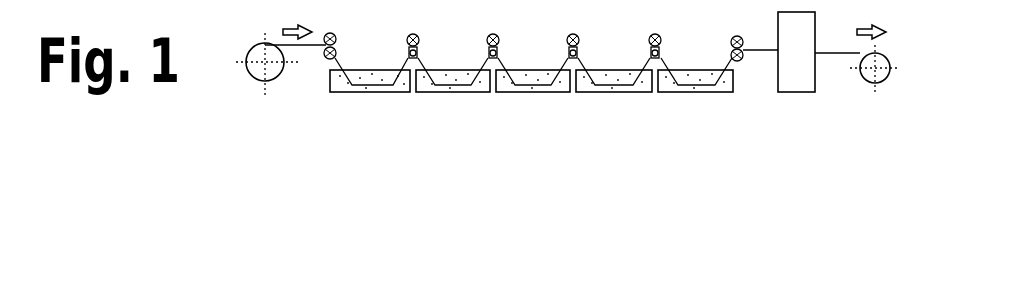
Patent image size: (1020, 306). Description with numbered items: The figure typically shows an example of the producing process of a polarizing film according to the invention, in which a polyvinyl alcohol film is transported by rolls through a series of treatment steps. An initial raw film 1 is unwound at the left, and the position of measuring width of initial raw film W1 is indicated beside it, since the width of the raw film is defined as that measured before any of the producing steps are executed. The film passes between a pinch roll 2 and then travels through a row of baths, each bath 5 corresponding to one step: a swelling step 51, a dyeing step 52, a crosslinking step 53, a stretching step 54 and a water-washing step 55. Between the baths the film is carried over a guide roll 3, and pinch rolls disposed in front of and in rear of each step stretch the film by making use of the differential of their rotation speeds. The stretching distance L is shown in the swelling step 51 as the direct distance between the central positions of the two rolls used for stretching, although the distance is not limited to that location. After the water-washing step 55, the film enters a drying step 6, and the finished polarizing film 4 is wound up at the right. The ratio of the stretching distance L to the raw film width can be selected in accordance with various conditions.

The initial raw film 1 is at (258, 78).
The pinch roll 2 is at (334, 46).
The guide roll 3 is at (430, 70).
The polarizing film 4 is at (878, 83).
The bath 5 is at (537, 113).
The swelling step 51 is at (370, 93).
The dyeing step 52 is at (436, 93).
The crosslinking step 53 is at (535, 93).
The stretching step 54 is at (618, 93).
The water-washing step 55 is at (698, 93).
The drying step 6 is at (798, 92).
The position of measuring width of initial raw film W1 is at (302, 57).
The stretching distance L is at (412, 93).